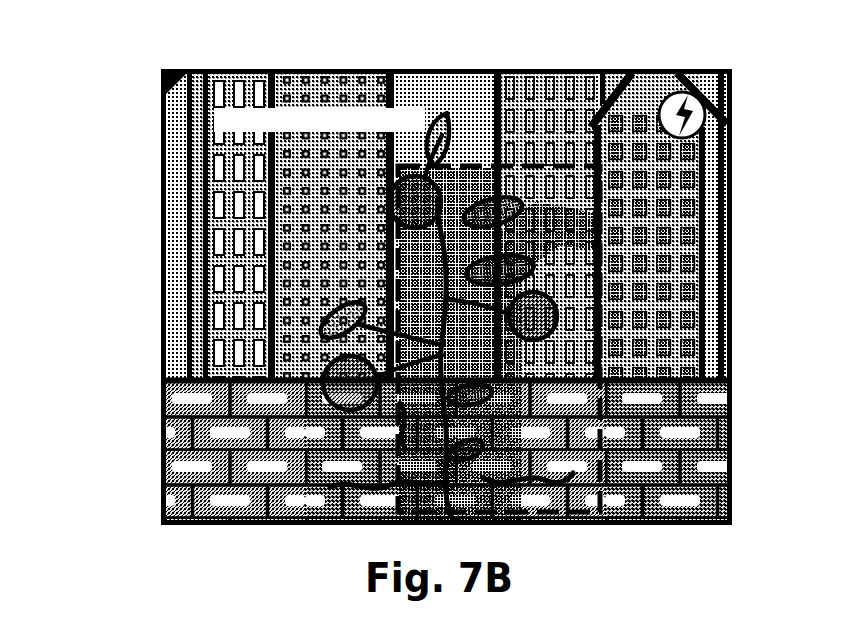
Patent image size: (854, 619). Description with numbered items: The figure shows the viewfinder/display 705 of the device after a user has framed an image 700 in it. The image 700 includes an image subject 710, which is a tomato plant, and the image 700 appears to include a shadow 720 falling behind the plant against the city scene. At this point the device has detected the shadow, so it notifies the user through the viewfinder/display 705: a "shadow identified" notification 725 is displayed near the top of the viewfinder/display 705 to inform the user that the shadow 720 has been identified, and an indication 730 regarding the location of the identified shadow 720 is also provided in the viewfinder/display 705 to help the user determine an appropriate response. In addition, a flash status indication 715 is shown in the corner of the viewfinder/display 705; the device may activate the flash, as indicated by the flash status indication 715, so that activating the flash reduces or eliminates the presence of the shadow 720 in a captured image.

The image 700 is at (190, 165).
The viewfinder/display 705 is at (412, 72).
The image subject 710 is at (388, 410).
The flash status indication 715 is at (706, 75).
The shadow 720 is at (517, 423).
The shadow identified notification 725 is at (313, 128).
The indication regarding the location of the identified shadow 730 is at (533, 165).